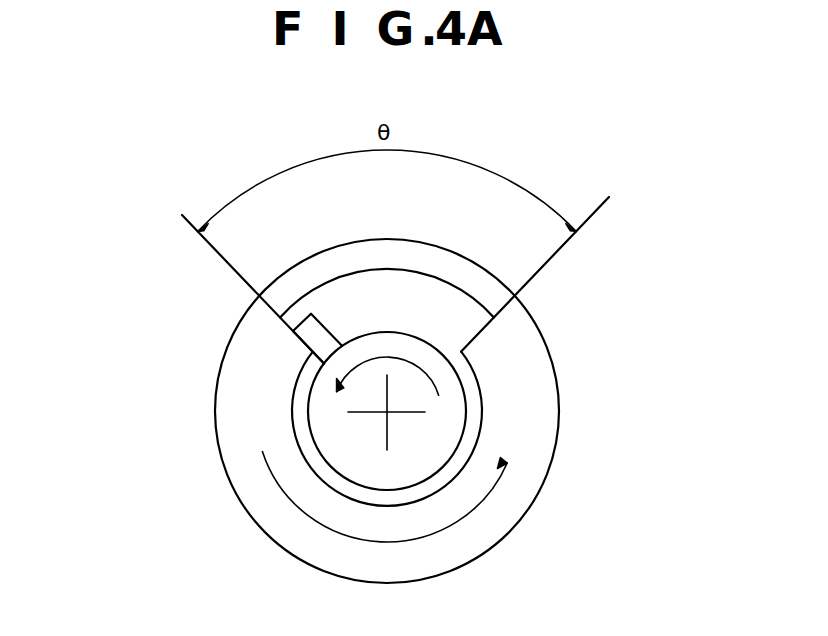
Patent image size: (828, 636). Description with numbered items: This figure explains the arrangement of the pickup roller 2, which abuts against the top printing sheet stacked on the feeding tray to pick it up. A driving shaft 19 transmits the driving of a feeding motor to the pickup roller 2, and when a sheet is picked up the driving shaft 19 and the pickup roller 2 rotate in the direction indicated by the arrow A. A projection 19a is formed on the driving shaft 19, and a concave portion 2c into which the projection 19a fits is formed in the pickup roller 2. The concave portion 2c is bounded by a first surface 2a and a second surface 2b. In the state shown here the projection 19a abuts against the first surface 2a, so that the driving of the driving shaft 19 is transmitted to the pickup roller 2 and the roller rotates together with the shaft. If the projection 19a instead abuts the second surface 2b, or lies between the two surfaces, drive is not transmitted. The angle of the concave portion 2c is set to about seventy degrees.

The pickup roller 2 is at (248, 427).
The first surface 2a is at (290, 333).
The second surface 2b is at (478, 334).
The concave portion 2c is at (407, 294).
The driving shaft 19 is at (448, 435).
The projection 19a is at (318, 337).
The arrow A is at (437, 396).